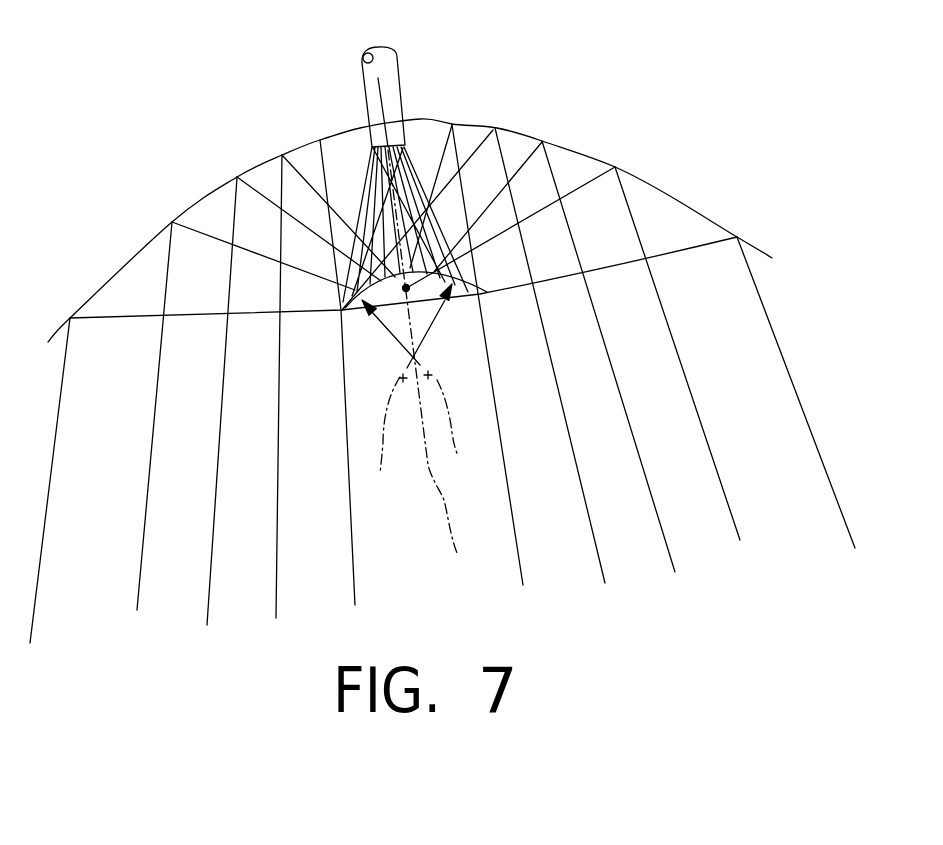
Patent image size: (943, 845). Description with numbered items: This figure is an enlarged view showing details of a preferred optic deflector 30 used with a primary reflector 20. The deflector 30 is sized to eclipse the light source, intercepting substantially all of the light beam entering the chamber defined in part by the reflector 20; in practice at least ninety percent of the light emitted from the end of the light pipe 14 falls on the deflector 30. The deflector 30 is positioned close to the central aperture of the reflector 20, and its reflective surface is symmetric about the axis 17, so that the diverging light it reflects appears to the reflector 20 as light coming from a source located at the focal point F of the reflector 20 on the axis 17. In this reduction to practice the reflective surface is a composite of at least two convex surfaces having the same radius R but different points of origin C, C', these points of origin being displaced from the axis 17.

The light pipe 14 is at (400, 67).
The reflector 20 is at (201, 201).
The deflector 30 is at (457, 296).
The axis 17 is at (443, 362).
The focal point F is at (440, 276).
The radius R is at (392, 333).
The point of origin C is at (378, 442).
The point of origin C' is at (462, 434).